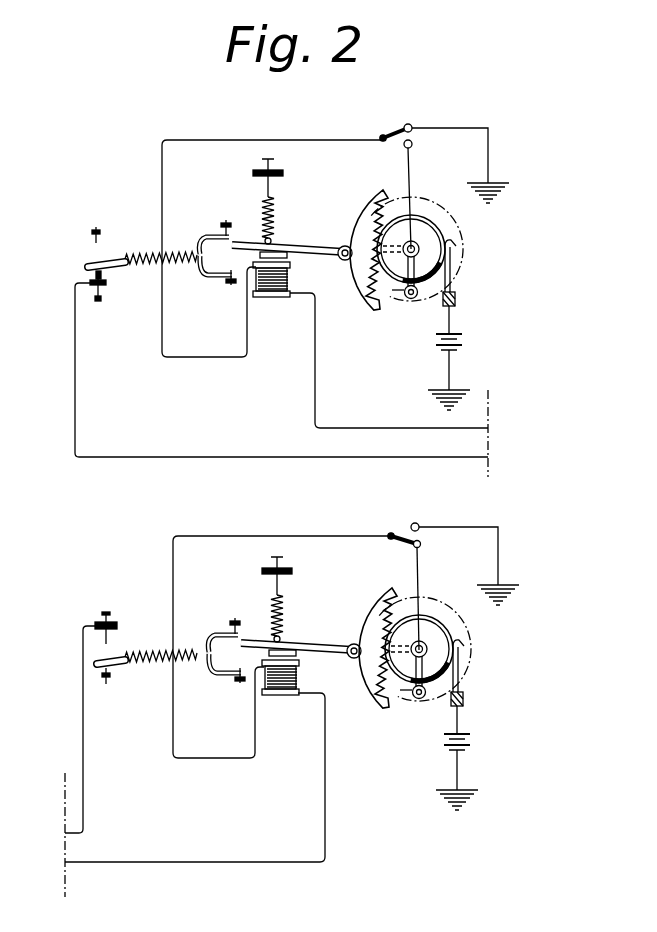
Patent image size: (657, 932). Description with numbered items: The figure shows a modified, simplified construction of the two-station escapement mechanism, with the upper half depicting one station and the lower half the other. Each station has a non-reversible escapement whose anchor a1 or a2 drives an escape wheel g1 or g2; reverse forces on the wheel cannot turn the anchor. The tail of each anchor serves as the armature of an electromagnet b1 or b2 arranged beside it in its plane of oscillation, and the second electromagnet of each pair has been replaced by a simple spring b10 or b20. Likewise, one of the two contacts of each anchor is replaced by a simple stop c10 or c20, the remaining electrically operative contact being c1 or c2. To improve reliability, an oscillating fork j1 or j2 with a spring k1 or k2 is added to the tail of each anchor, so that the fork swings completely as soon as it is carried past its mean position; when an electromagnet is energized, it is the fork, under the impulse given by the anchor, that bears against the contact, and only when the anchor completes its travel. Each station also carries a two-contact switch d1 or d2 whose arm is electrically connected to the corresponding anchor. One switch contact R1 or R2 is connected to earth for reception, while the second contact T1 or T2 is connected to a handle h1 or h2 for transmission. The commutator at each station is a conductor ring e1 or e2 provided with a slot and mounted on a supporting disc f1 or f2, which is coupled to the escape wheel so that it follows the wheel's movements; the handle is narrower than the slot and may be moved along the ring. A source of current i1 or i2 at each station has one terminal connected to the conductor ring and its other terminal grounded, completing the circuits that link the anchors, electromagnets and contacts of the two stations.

The stop c20 is at (92, 232).
The spring k2 is at (148, 256).
The contact c2 is at (89, 284).
The oscillating fork j2 is at (110, 272).
The electromagnet b2 is at (250, 284).
The spring b20 is at (274, 200).
The anchor a2 is at (356, 226).
The two-contact switch d2 is at (381, 132).
The contact R2 is at (409, 124).
The contact T2 is at (413, 147).
The supporting disc f2 is at (420, 213).
The conductor ring e2 is at (447, 233).
The escape wheel g2 is at (392, 288).
The handle h2 is at (414, 298).
The source of current i2 is at (460, 338).
The contact c1 is at (110, 614).
The spring k1 is at (160, 655).
The stop c10 is at (106, 683).
The oscillating fork j1 is at (120, 666).
The electromagnet b1 is at (258, 694).
The spring b10 is at (301, 599).
The anchor a1 is at (364, 648).
The two-contact switch d1 is at (393, 539).
The contact R1 is at (420, 521).
The contact T1 is at (421, 548).
The escape wheel g1 is at (401, 714).
The handle h1 is at (416, 711).
The source of current i1 is at (474, 752).